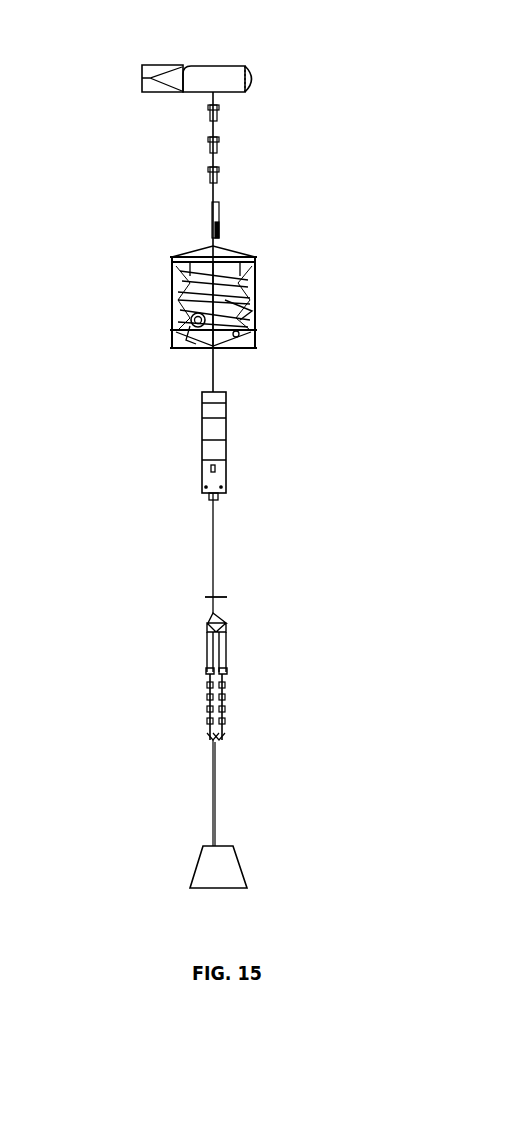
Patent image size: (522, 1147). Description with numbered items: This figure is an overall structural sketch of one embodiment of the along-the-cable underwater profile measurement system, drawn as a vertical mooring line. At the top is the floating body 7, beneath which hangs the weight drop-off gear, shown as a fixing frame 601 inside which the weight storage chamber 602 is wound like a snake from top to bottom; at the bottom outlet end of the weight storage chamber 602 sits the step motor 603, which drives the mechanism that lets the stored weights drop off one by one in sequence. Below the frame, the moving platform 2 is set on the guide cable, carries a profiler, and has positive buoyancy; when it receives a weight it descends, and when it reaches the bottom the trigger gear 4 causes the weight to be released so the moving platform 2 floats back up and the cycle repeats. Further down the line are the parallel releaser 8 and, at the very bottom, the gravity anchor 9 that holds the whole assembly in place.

The floating body 7 is at (258, 70).
The fixing frame 601 is at (348, 263).
The weight storage chamber 602 is at (348, 339).
The step motor 603 is at (168, 309).
The moving platform 2 is at (226, 436).
The trigger gear 4 is at (227, 596).
The parallel releaser 8 is at (225, 683).
The gravity anchor 9 is at (238, 862).